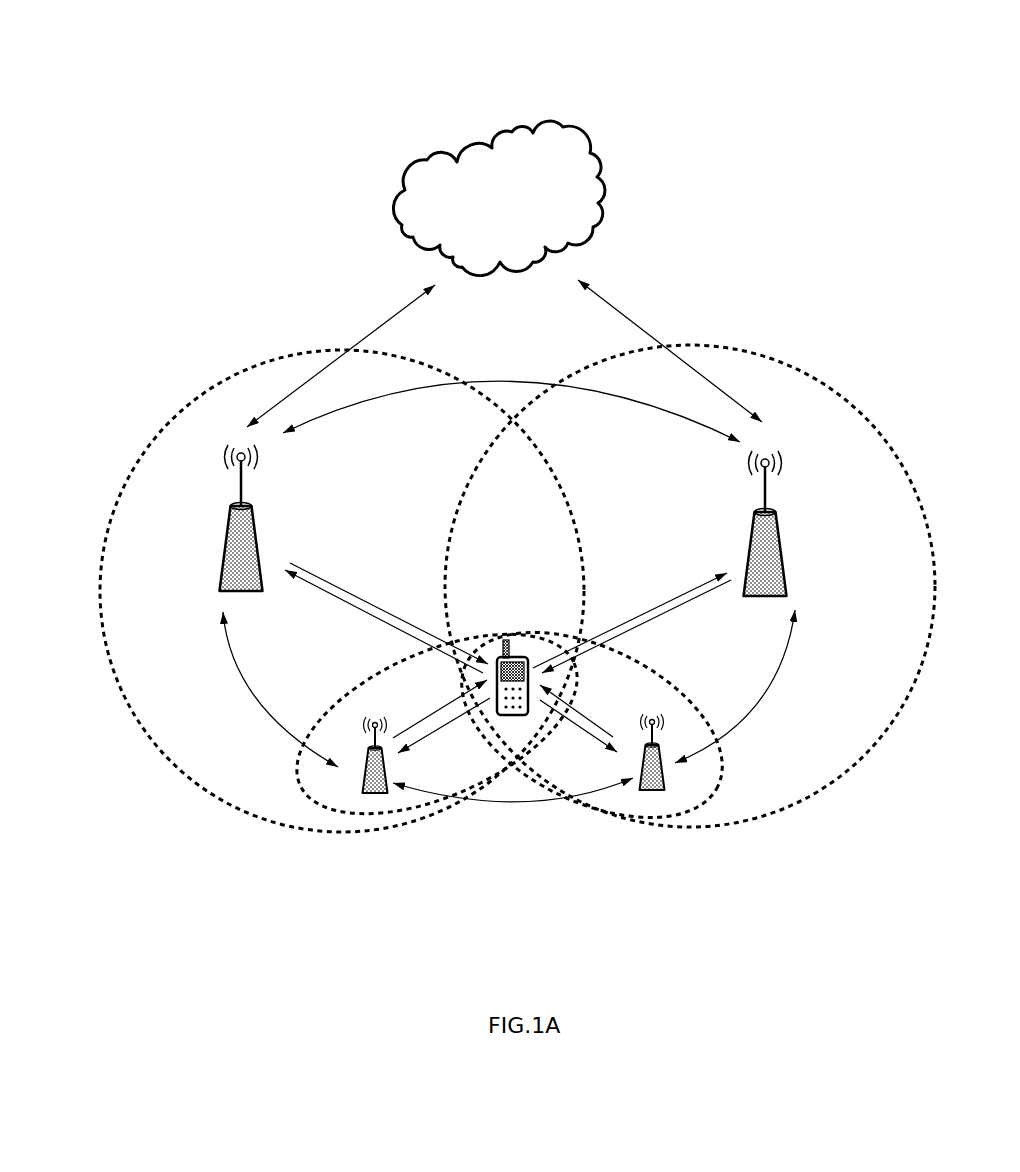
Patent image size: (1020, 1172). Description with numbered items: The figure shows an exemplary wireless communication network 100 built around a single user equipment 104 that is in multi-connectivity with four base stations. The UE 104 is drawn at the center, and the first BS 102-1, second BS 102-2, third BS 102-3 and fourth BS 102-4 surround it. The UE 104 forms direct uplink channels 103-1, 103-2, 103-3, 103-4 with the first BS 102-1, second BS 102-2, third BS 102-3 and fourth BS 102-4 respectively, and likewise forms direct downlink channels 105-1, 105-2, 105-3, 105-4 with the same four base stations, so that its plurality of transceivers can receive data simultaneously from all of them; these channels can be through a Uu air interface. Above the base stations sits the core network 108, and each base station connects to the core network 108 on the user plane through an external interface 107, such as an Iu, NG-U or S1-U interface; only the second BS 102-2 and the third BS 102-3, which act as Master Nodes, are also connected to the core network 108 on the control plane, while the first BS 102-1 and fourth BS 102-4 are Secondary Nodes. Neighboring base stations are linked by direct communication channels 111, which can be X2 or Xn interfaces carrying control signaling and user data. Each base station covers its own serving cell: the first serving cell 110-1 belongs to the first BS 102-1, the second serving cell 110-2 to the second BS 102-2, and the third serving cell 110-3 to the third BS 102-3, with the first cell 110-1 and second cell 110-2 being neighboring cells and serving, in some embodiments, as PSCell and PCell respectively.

The wireless communication network 100 is at (88, 115).
The first BS 102-1 is at (386, 800).
The second BS 102-2 is at (255, 532).
The third BS 102-3 is at (783, 537).
The fourth BS 102-4 is at (652, 792).
The uplink channel 103-1 is at (449, 722).
The uplink channel 103-2 is at (385, 623).
The uplink channel 103-3 is at (626, 634).
The uplink channel 103-4 is at (577, 725).
The UE 104 is at (520, 652).
The downlink channel 105-1 is at (440, 709).
The downlink channel 105-2 is at (348, 590).
The downlink channel 105-3 is at (681, 590).
The downlink channel 105-4 is at (578, 712).
The external interface 107 is at (387, 320).
The core network 108 is at (430, 182).
The first serving cell 110-1 is at (345, 817).
The second serving cell 110-2 is at (225, 800).
The third serving cell 110-3 is at (803, 795).
The direct communication channel 111 is at (490, 383).